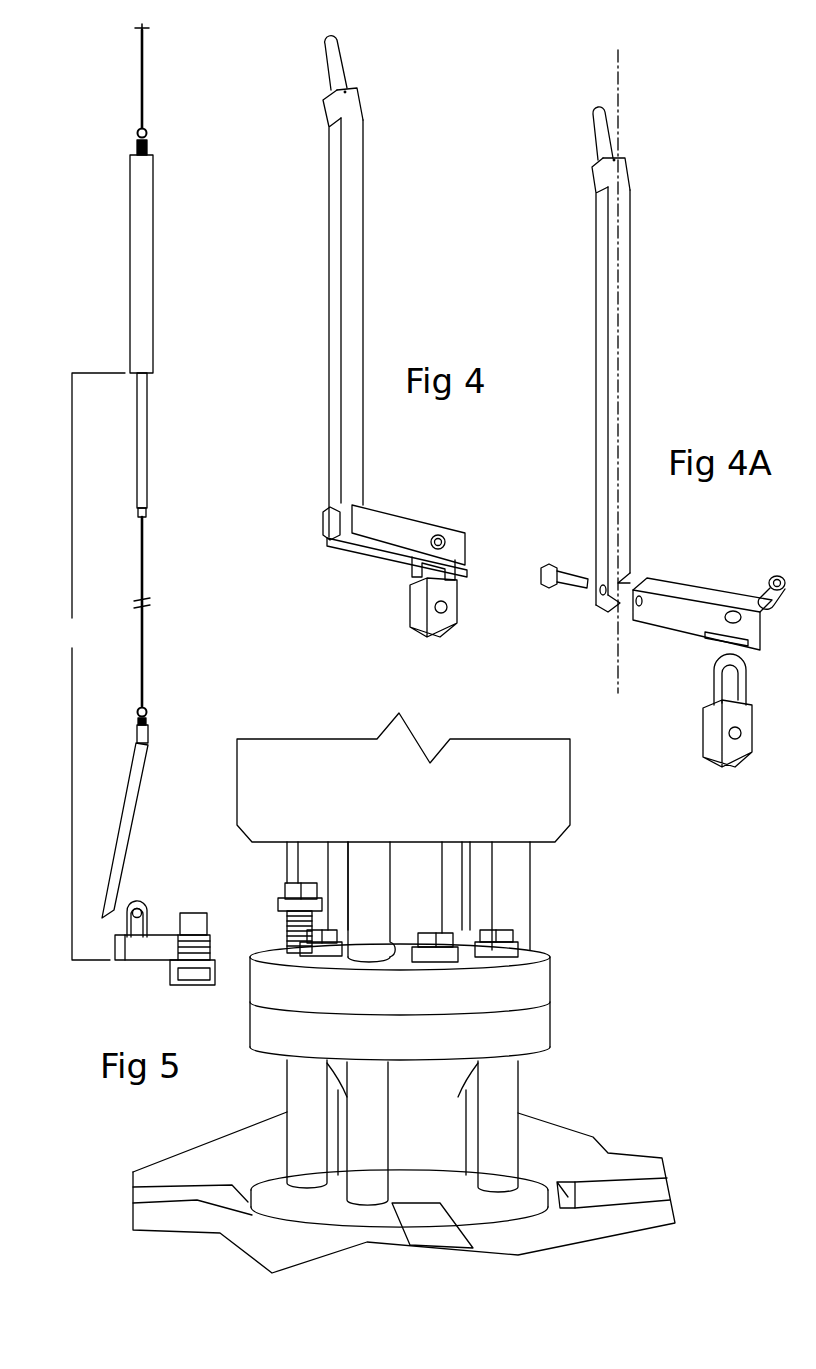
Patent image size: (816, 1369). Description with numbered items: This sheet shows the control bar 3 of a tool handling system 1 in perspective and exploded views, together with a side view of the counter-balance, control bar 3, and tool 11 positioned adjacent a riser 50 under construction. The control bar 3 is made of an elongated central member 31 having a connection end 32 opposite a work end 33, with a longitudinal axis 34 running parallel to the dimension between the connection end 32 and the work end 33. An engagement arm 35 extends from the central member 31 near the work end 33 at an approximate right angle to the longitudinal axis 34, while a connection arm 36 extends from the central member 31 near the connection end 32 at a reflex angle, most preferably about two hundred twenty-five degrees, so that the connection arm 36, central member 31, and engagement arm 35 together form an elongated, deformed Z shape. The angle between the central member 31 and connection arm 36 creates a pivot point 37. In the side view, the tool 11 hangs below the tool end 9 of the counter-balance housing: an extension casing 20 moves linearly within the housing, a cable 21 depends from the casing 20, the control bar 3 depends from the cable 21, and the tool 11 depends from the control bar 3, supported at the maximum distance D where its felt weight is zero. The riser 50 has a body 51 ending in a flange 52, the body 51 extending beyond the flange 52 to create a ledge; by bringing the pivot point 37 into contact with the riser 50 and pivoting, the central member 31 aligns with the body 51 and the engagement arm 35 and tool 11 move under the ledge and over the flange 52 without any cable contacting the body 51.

In FIG. 5, the tool handling system 1 is at (100, 260).
In FIG. 5, the control bar 3 is at (123, 860).
In FIG. 4, the control bar 3 is at (397, 309).
In FIG. 5, the tool end 9 is at (152, 375).
In FIG. 5, the tool 11 is at (163, 935).
In FIG. 5, the extension casing 20 is at (142, 458).
In FIG. 5, the cable 21 is at (143, 662).
In FIG. 4, the elongated central member 31 is at (347, 256).
In FIG. 4A, the elongated central member 31 is at (631, 353).
In FIG. 4, the connection end 32 is at (349, 150).
In FIG. 4A, the connection end 32 is at (612, 220).
In FIG. 4, the work end 33 is at (349, 494).
In FIG. 4A, the longitudinal axis 34 is at (617, 655).
In FIG. 4, the engagement arm 35 is at (398, 535).
In FIG. 4A, the engagement arm 35 is at (680, 598).
In FIG. 4, the connection arm 36 is at (350, 92).
In FIG. 4A, the connection arm 36 is at (625, 158).
In FIG. 4, the pivot point 37 is at (365, 120).
In FIG. 4A, the pivot point 37 is at (631, 190).
In FIG. 5, the riser 50 is at (423, 807).
In FIG. 5, the body 51 is at (543, 787).
In FIG. 5, the flange 52 is at (525, 993).